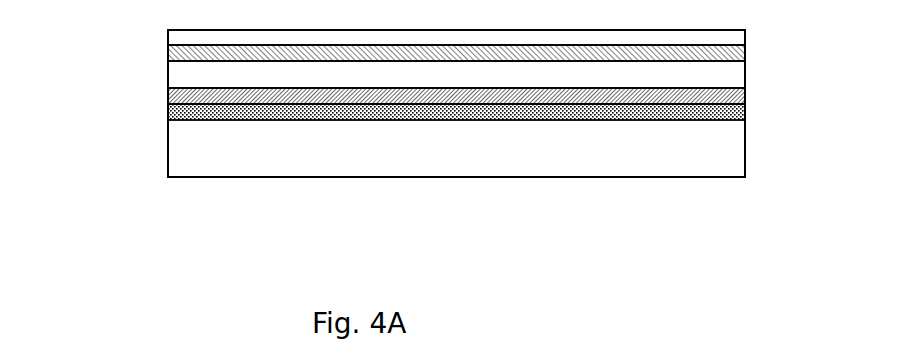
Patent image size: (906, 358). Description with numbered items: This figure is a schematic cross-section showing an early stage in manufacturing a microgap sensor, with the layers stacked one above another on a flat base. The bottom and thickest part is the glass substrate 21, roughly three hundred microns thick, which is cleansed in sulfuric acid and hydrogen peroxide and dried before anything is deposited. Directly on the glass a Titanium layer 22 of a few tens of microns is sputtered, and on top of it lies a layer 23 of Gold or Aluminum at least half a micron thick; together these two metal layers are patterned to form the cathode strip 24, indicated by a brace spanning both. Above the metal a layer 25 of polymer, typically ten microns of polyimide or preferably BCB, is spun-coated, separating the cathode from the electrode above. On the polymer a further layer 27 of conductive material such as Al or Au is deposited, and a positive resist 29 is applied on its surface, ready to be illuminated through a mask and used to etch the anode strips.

The glass substrate 21 is at (352, 155).
The Titanium layer 22 is at (458, 110).
The layer of Gold or Aluminum 23 is at (547, 97).
The cathode strip 24 is at (757, 85).
The layer of polymer 25 is at (648, 80).
The layer of conductive material 27 is at (322, 52).
The positive resist 29 is at (263, 37).